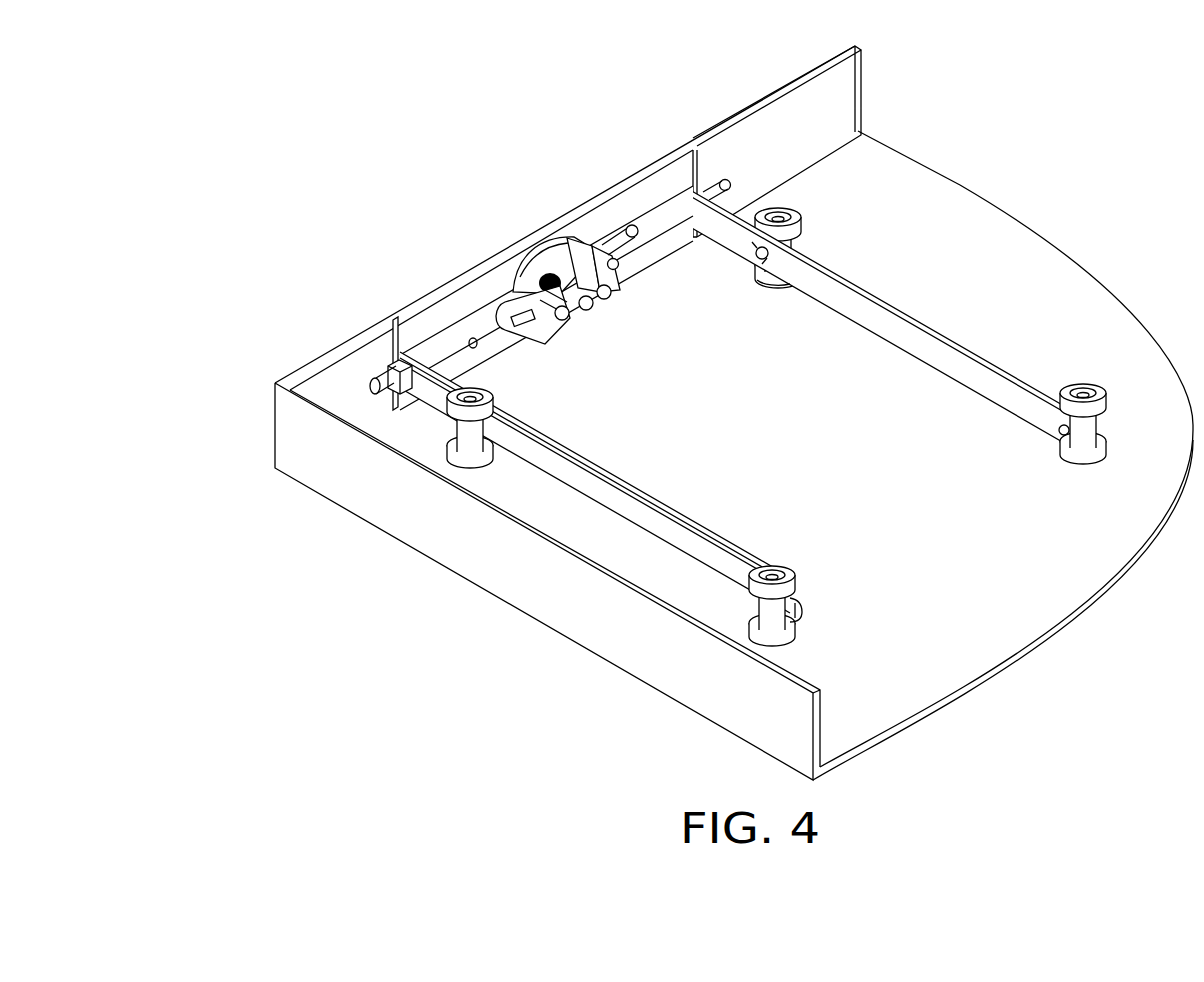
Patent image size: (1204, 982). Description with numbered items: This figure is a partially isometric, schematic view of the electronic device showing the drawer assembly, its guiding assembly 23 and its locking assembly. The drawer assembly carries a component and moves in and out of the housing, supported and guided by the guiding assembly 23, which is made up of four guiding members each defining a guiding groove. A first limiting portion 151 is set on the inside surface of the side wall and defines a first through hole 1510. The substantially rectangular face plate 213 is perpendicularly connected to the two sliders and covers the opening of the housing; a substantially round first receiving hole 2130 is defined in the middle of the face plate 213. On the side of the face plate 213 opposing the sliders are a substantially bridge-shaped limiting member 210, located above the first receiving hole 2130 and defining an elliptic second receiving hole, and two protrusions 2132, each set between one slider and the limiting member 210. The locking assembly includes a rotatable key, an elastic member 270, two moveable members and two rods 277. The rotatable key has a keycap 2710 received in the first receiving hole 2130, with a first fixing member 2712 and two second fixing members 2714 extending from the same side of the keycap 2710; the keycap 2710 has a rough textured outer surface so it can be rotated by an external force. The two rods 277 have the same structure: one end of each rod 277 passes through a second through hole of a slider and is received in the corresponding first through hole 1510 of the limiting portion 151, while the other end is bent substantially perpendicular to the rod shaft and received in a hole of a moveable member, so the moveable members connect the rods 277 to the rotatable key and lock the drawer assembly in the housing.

The face plate 213 is at (673, 163).
The first receiving hole 2130 is at (540, 268).
The protrusion 2132 is at (643, 233).
The elastic member 270 is at (545, 278).
The keycap 2710 is at (558, 258).
The first fixing member 2712 is at (580, 310).
The second fixing member 2714 is at (510, 256).
The limiting member 210 is at (556, 347).
The rod 277 is at (443, 348).
The first limiting portion 151 is at (393, 358).
The first through hole 1510 is at (370, 380).
The guiding assembly 23 is at (457, 408).